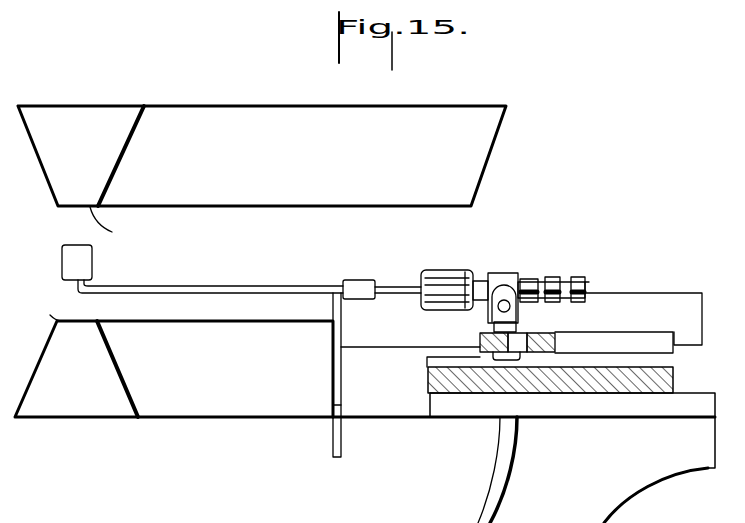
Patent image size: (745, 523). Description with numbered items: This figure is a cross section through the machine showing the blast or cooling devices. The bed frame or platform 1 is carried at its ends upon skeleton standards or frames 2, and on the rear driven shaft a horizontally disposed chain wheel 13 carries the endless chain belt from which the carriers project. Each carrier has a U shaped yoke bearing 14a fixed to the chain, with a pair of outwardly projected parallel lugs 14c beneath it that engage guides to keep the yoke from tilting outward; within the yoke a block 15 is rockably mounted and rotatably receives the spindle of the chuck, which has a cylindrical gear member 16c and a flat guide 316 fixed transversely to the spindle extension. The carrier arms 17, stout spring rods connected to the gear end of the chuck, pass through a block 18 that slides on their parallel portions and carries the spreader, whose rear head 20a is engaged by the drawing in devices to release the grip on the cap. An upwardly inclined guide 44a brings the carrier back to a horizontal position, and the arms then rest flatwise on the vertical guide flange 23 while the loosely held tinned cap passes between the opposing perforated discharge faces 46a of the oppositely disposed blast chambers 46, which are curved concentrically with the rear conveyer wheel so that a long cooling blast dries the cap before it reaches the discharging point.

The bed frame or platform 1 is at (674, 378).
The skeleton standard or frame 2 is at (510, 467).
The chain wheel 13 is at (604, 338).
The U shaped yoke bearing 14a is at (514, 314).
The outwardly projected parallel lugs 14c is at (480, 340).
The block 15 is at (506, 280).
The cylindrical gear member 16c is at (440, 272).
The carrier arms 17 is at (241, 269).
The block 18 is at (356, 282).
The rear head 20a is at (586, 292).
The vertical guide flange 23 is at (668, 300).
The flat guide 316 is at (554, 288).
The upwardly inclined guide 44a is at (335, 390).
The blast chambers 46 is at (365, 261).
The perforated discharge faces 46a is at (84, 264).